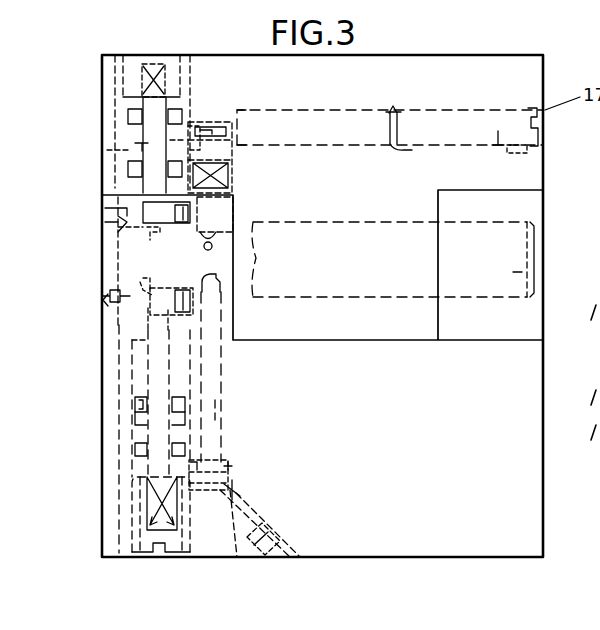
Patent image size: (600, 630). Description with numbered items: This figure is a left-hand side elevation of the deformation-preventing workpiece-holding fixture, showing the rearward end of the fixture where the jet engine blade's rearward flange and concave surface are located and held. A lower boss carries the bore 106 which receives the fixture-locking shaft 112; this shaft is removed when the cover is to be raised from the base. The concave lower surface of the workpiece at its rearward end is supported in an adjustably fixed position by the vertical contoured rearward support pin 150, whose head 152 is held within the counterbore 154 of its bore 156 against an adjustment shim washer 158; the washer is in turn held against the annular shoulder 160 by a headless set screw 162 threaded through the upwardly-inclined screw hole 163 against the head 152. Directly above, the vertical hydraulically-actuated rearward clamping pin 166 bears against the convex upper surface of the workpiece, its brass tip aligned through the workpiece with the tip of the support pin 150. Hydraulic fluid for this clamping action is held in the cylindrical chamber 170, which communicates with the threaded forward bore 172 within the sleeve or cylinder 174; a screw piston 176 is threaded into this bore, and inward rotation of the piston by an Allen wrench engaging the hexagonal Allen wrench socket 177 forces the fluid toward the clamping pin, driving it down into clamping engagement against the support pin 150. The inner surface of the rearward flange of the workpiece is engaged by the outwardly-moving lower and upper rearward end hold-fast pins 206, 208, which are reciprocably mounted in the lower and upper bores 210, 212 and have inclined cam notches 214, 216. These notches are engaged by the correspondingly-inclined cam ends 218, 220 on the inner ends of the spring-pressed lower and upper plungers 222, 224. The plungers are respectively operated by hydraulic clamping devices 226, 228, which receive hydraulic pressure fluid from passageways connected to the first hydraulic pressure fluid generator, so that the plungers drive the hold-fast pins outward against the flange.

The bore 106 is at (465, 298).
The fixture-locking shaft 112 is at (542, 272).
The rearward support pin 150 is at (225, 367).
The head 152 is at (240, 489).
The counterbore 154 is at (237, 557).
The bore 156 is at (224, 409).
The adjustment shim washer 158 is at (233, 472).
The annular shoulder 160 is at (228, 462).
The headless set screw 162 is at (258, 526).
The upwardly-inclined screw hole 163 is at (275, 537).
The rearward clamping pin 166 is at (233, 196).
The cylindrical chamber 170 is at (320, 143).
The threaded forward bore 172 is at (408, 148).
The sleeve or cylinder 174 is at (427, 110).
The screw piston 176 is at (513, 149).
The Allen wrench socket 177 is at (548, 130).
The lower rearward end hold-fast pin 206 is at (103, 297).
The upper rearward end hold-fast pin 208 is at (110, 240).
The lower bore 210 is at (145, 275).
The upper bore 212 is at (103, 258).
The inclined cam notch 214 is at (160, 292).
The inclined cam notch 216 is at (165, 230).
The inclined cam end 218 is at (120, 337).
The inclined cam end 220 is at (120, 193).
The lower plunger 222 is at (120, 370).
The upper plunger 224 is at (107, 150).
The hydraulic clamping device 226 is at (120, 435).
The hydraulic clamping device 228 is at (112, 129).